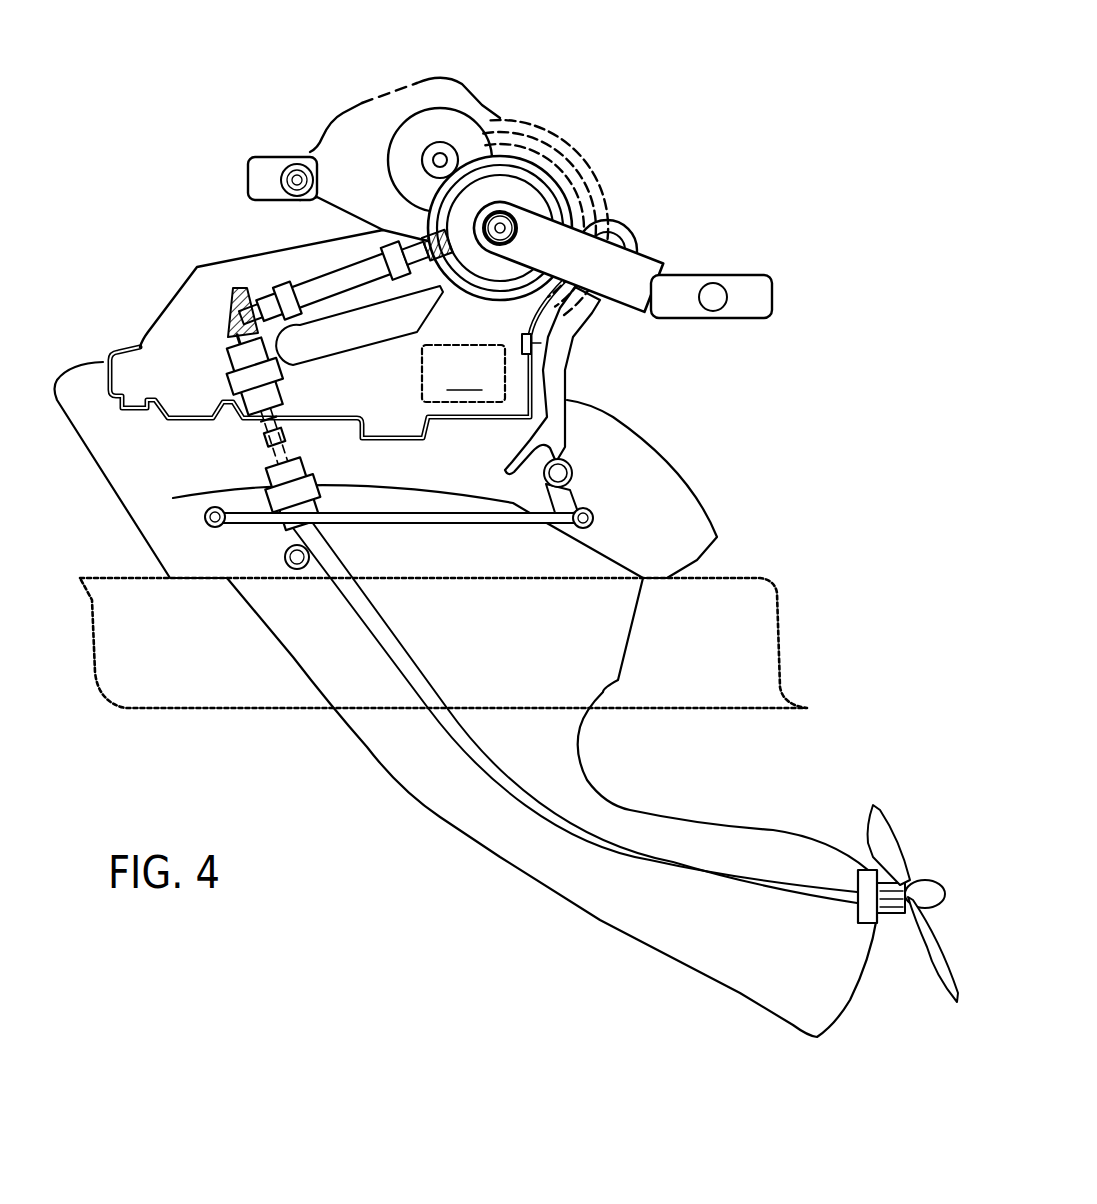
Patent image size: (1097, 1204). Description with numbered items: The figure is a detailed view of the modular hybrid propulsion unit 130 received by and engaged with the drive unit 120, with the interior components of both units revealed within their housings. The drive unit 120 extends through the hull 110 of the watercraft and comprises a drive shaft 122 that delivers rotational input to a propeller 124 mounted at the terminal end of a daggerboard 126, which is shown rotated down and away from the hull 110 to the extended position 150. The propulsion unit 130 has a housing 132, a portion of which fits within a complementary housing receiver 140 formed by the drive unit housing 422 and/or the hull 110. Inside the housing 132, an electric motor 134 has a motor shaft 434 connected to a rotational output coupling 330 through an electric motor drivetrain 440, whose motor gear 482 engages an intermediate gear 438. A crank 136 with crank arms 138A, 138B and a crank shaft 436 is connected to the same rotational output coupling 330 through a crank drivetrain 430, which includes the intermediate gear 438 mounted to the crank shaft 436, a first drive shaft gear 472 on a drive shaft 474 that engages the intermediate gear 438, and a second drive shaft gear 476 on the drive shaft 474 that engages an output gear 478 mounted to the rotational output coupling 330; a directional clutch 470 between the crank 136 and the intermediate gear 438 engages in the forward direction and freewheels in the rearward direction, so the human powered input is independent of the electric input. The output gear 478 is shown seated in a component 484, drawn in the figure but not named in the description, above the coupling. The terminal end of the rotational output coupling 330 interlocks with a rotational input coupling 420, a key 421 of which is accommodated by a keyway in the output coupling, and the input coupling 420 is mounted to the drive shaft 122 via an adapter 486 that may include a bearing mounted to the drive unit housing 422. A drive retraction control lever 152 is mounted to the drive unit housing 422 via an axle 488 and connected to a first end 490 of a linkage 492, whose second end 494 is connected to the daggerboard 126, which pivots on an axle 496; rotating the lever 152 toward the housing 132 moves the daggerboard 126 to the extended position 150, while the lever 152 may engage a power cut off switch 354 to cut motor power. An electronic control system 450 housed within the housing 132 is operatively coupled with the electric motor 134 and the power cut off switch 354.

The hull 110 is at (122, 707).
The drive unit 120 is at (727, 462).
The drive shaft 122 is at (742, 880).
The propeller 124 is at (920, 887).
The daggerboard 126 is at (598, 918).
The modular hybrid propulsion unit 130 is at (152, 177).
The housing 132 is at (173, 300).
The electric motor 134 is at (405, 137).
The crank 136 is at (523, 210).
The crank arm 138A is at (283, 170).
The crank arm 138B is at (655, 290).
The housing receiver 140 is at (370, 414).
The extended position 150 is at (345, 812).
The drive retraction control lever 152 is at (627, 230).
The rotational output coupling 330 is at (292, 425).
The power cut off switch 354 is at (541, 347).
The rotational input coupling 420 is at (267, 460).
The key 421 is at (272, 440).
The drive unit housing 422 is at (627, 423).
The crank drivetrain 430 is at (357, 247).
The motor shaft 434 is at (438, 152).
The crank shaft 436 is at (507, 228).
The intermediate gear 438 is at (512, 170).
The electric motor drivetrain 440 is at (495, 132).
The electronic control system 450 is at (463, 373).
The directional clutch 470 is at (517, 184).
The first drive shaft gear 472 is at (433, 237).
The drive shaft 474 is at (305, 293).
The second drive shaft gear 476 is at (238, 290).
The output gear 478 is at (228, 336).
The motor gear 482 is at (447, 152).
The upper bushing 484 is at (223, 358).
The adapter 486 is at (322, 503).
The axle 488 is at (572, 467).
The first end 490 is at (593, 518).
The linkage 492 is at (443, 520).
The second end 494 is at (205, 516).
The axle 496 is at (286, 554).